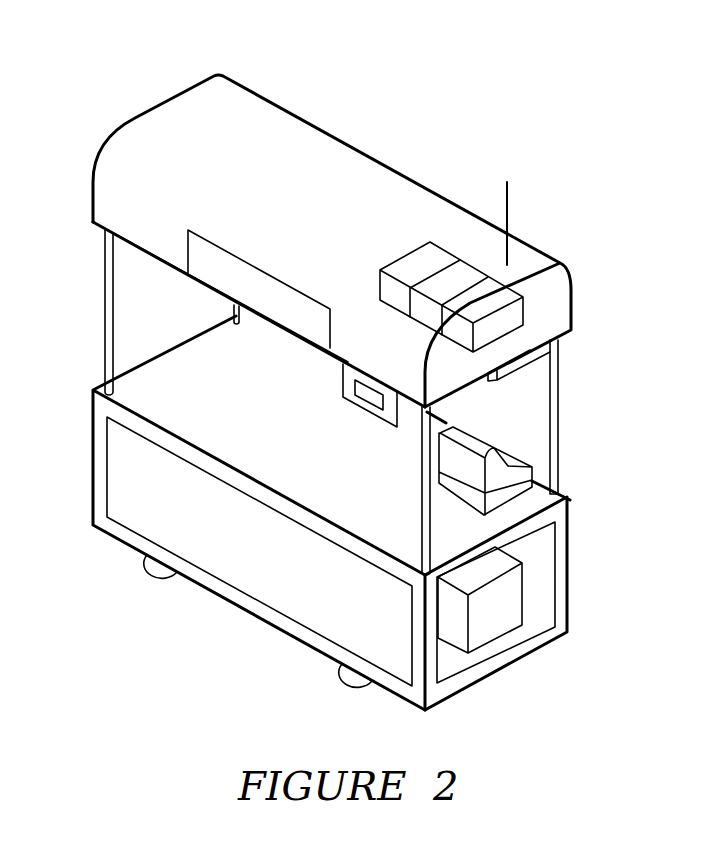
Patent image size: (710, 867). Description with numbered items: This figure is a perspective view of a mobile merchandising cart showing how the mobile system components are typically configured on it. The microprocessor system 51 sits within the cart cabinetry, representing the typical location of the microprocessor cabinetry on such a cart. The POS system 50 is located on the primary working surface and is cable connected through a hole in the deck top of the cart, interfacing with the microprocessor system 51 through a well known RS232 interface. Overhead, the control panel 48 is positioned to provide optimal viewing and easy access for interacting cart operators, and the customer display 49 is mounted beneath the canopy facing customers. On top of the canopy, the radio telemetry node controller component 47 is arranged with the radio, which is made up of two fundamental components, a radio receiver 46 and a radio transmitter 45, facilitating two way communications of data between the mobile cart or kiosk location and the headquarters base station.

The radio transmitter 45 is at (419, 249).
The radio receiver 46 is at (411, 291).
The radio telemetry node controller component 47 is at (505, 287).
The control panel 48 is at (530, 349).
The customer display 49 is at (348, 402).
The POS system 50 is at (533, 466).
The microprocessor system 51 is at (515, 627).